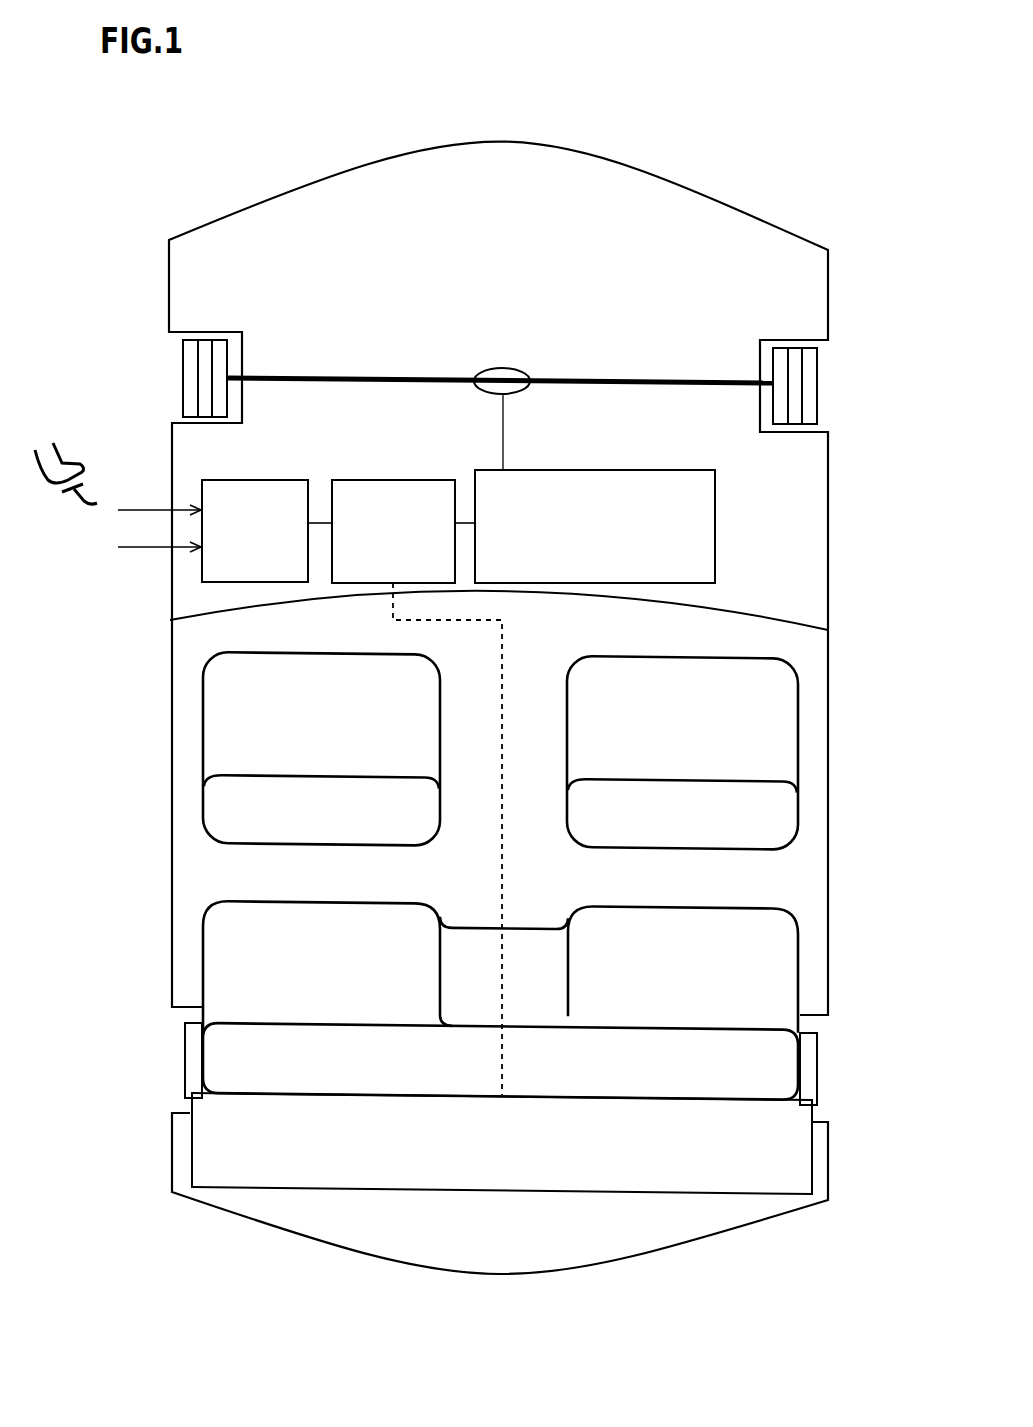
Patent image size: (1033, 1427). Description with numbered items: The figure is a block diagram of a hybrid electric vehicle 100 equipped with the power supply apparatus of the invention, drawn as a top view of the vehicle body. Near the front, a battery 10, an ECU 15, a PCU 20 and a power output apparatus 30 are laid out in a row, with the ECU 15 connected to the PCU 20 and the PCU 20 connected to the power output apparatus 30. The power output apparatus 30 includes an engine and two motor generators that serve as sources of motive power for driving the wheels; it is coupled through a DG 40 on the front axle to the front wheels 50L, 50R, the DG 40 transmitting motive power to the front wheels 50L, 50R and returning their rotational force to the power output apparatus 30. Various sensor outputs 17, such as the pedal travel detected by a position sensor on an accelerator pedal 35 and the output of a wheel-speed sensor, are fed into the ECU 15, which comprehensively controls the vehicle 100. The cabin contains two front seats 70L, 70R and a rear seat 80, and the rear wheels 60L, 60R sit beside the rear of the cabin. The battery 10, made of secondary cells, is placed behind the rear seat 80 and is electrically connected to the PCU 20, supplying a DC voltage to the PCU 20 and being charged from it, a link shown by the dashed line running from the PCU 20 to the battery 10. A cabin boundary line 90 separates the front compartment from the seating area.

The hybrid electric vehicle 100 is at (485, 102).
The battery 10 is at (504, 1182).
The ECU 15 is at (278, 492).
The various sensor outputs 17 is at (143, 500).
The PCU 20 is at (362, 492).
The power output apparatus 30 is at (690, 485).
The accelerator pedal 35 is at (85, 500).
The DG 40 is at (501, 368).
The front wheel 50L is at (190, 382).
The front wheel 50R is at (810, 384).
The rear wheel 60L is at (192, 1058).
The rear wheel 60R is at (808, 1070).
The front seat 70L is at (323, 665).
The front seat 70R is at (683, 668).
The rear seat 80 is at (323, 912).
The dashboard line 90 is at (747, 613).